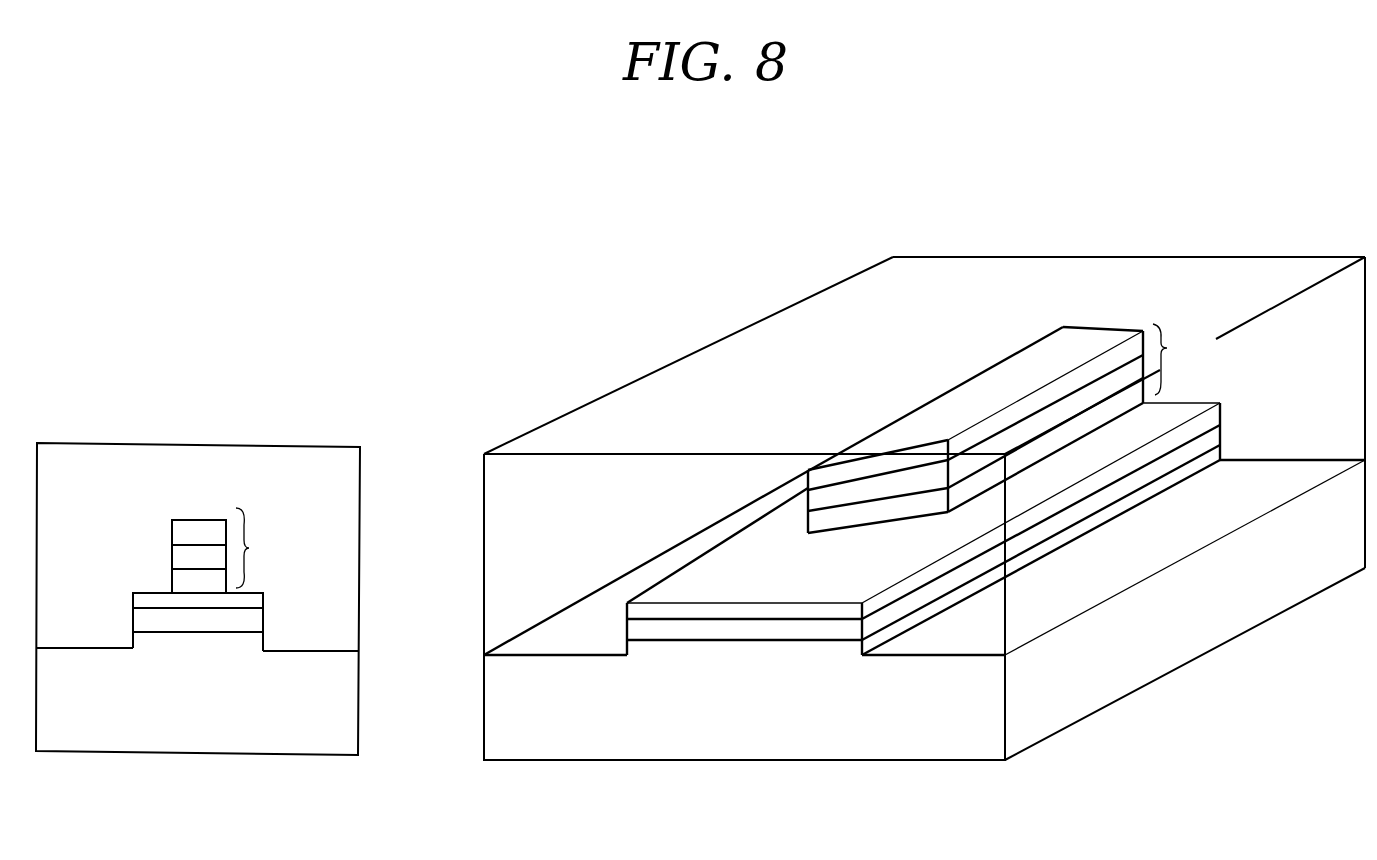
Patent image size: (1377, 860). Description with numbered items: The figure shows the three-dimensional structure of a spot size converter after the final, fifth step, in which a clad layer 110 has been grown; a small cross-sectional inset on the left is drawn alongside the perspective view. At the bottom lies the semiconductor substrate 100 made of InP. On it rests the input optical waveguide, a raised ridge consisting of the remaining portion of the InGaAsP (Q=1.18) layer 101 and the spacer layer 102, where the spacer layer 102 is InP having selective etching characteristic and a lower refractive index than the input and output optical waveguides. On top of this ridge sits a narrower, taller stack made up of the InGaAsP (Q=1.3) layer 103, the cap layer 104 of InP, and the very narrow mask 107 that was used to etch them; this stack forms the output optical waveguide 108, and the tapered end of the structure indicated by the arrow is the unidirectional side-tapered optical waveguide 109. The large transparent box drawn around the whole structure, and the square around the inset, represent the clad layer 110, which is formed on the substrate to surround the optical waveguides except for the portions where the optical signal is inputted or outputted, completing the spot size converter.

The semiconductor substrate 100 is at (500, 710).
The InGaAsP (Q=1.18) layer 101 is at (653, 632).
The spacer layer 102 is at (142, 603).
The InGaAsP (Q=1.3) layer 103 is at (180, 578).
The cap layer 104 is at (180, 556).
The mask 107 is at (178, 530).
The output optical waveguide 108 is at (692, 458).
The unidirectional side-tapered optical waveguide 109 is at (839, 432).
The clad layer 110 is at (580, 404).